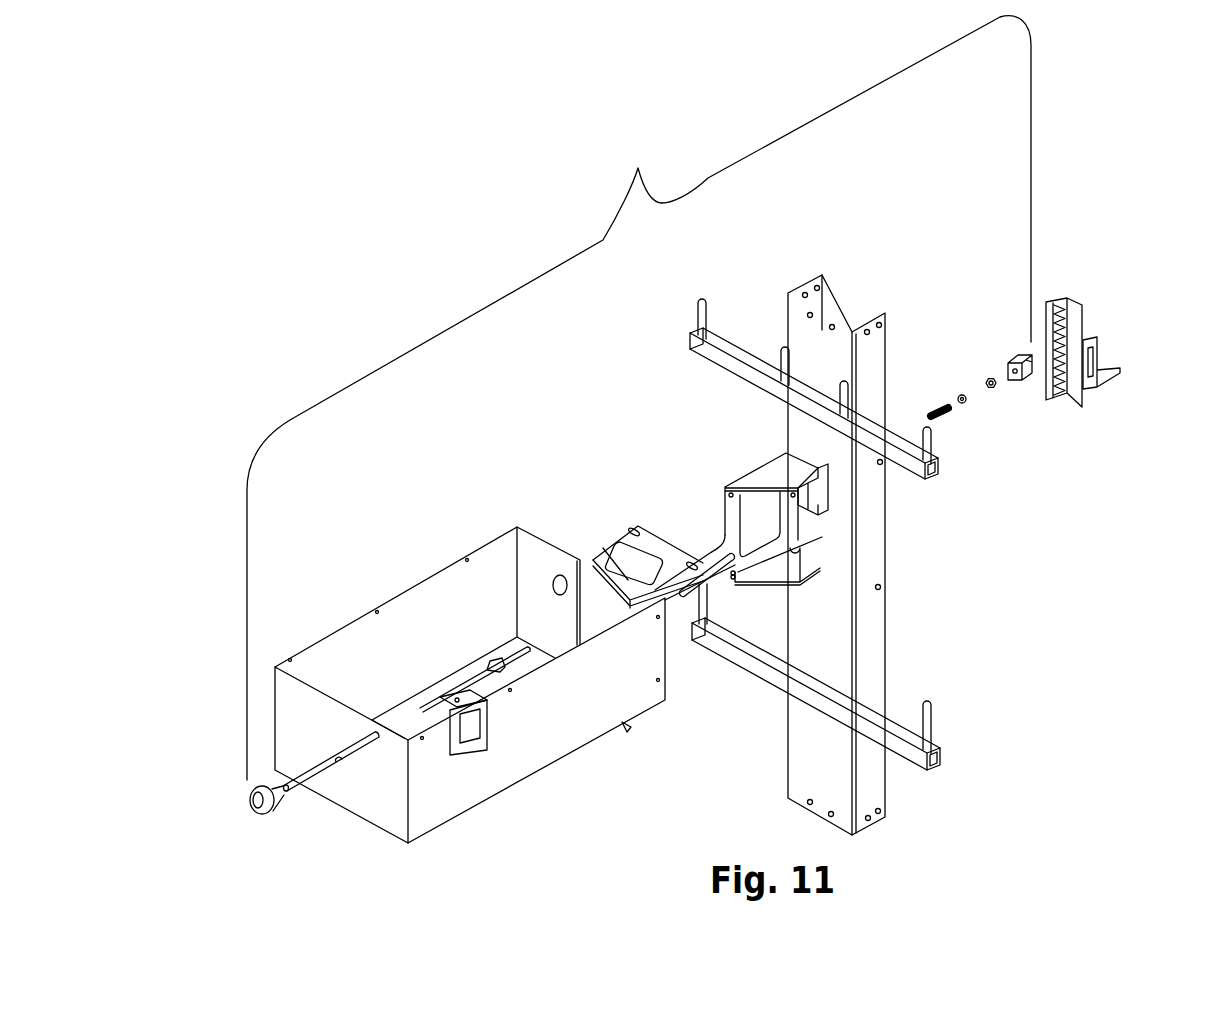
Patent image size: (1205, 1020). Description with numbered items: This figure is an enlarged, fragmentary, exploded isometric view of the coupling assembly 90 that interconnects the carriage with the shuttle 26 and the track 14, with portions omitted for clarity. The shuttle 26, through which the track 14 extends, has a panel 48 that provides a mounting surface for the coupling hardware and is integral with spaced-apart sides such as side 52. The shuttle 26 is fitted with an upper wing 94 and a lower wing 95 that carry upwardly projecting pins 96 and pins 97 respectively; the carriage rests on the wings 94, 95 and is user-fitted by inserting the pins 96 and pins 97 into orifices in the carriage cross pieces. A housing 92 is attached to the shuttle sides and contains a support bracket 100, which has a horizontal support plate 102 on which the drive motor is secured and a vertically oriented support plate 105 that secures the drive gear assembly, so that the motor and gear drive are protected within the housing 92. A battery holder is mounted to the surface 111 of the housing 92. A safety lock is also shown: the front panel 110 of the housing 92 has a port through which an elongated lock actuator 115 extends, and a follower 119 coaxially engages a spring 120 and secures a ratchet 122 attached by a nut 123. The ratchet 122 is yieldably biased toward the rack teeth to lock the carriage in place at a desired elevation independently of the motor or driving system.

The coupling assembly 90 is at (639, 398).
The housing 92 is at (494, 506).
The front panel 110 is at (373, 793).
The surface 111 is at (538, 745).
The follower 119 is at (422, 710).
The lock actuator 115 is at (312, 772).
The support bracket 100 is at (700, 510).
The horizontal support plate 102 is at (615, 545).
The vertically oriented support plate 105 is at (736, 500).
The shuttle panel 48 is at (825, 598).
The shuttle 26 is at (888, 290).
The side 52 is at (877, 607).
The upper wing 94 is at (833, 431).
The pins 96 is at (928, 443).
The lower wing 95 is at (882, 707).
The pins 97 is at (937, 716).
The spring 120 is at (947, 413).
The nut 123 is at (993, 387).
The ratchet 122 is at (1025, 382).
The track 14 is at (1088, 318).